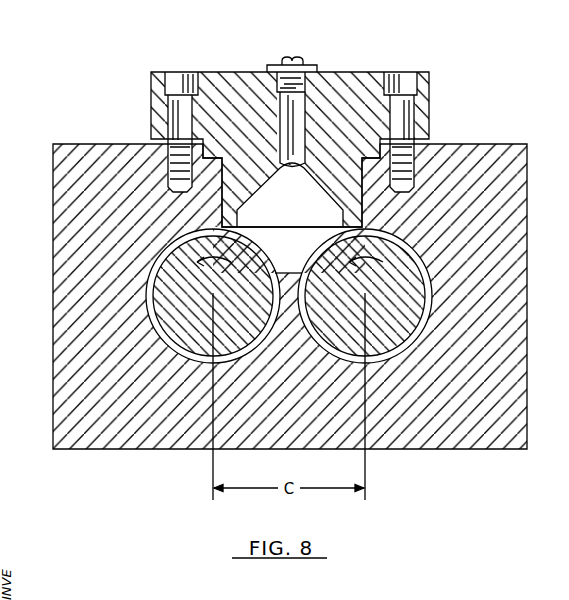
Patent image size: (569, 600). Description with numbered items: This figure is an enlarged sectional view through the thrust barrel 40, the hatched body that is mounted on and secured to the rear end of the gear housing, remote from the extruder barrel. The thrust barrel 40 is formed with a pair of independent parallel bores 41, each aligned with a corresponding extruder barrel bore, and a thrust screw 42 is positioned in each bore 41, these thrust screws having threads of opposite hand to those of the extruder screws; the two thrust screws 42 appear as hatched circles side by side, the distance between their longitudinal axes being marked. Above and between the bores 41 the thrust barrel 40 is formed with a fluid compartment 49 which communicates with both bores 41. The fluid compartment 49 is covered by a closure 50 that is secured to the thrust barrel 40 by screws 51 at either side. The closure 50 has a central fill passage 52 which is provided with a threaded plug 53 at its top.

The thrust barrel 40 is at (68, 167).
The bores 41 is at (148, 290).
The thrust screw 42 is at (202, 343).
The fluid compartment 49 is at (302, 247).
The closure 50 is at (226, 80).
The screws 51 is at (172, 82).
The central fill passage 52 is at (300, 122).
The threaded plug 53 is at (304, 59).